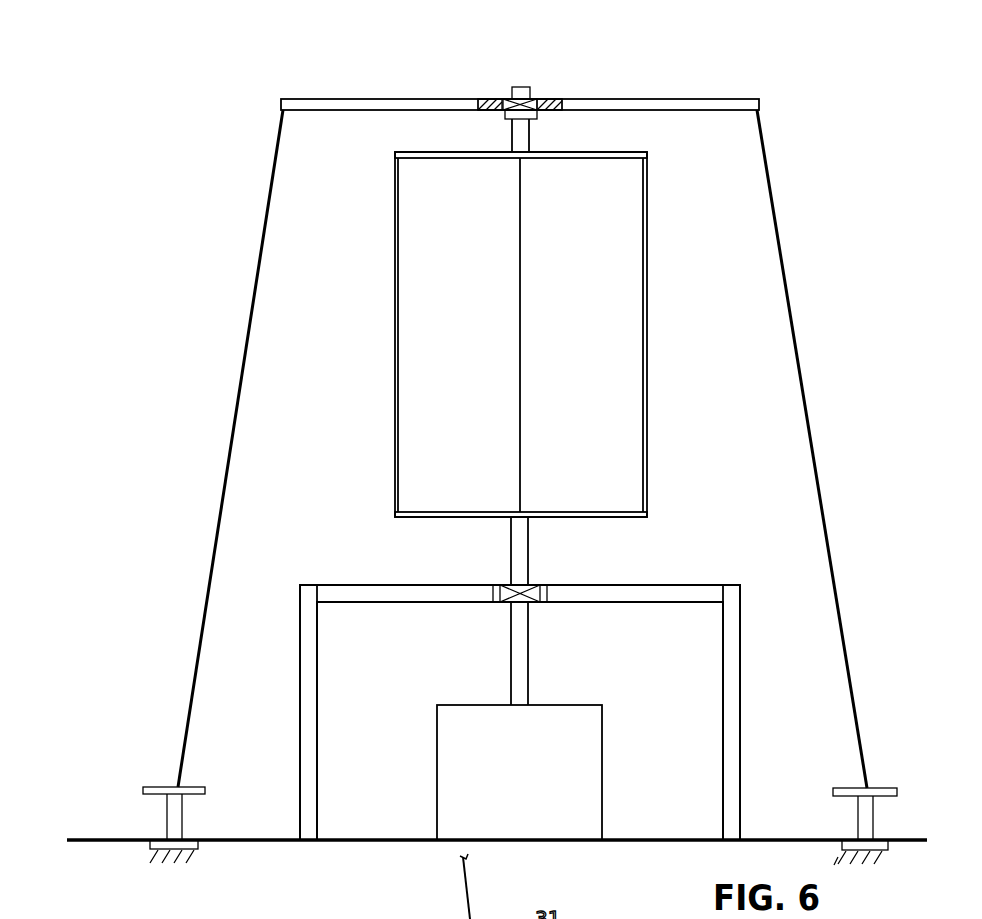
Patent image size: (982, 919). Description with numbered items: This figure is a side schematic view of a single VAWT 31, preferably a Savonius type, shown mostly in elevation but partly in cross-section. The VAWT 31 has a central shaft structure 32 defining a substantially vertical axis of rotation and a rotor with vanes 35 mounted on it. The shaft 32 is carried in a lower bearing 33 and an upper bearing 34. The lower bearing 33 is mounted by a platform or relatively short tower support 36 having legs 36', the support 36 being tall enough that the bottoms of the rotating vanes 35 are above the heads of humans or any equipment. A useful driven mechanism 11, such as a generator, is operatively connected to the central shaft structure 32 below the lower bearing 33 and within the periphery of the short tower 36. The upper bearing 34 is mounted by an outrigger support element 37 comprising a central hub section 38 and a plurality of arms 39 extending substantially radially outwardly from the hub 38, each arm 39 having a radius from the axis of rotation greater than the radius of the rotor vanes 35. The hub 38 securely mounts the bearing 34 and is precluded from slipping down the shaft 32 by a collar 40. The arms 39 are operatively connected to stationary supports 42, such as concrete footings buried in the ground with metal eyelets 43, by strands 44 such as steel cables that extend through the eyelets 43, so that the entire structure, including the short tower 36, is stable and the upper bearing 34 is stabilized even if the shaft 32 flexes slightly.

The useful driven mechanism 11 is at (587, 732).
The VAWT 31 is at (378, 312).
The central shaft structure 32 is at (522, 135).
The lower bearing 33 is at (537, 585).
The upper bearing 34 is at (541, 99).
The vanes 35 is at (615, 315).
The short tower support 36 is at (504, 644).
The legs 36' is at (510, 712).
The support element 37 is at (578, 82).
The central hub section 38 is at (493, 100).
The arms 39 is at (337, 100).
The collar 40 is at (507, 117).
The stationary support 42 is at (157, 837).
The eyelet 43 is at (163, 787).
The strands 44 is at (228, 447).